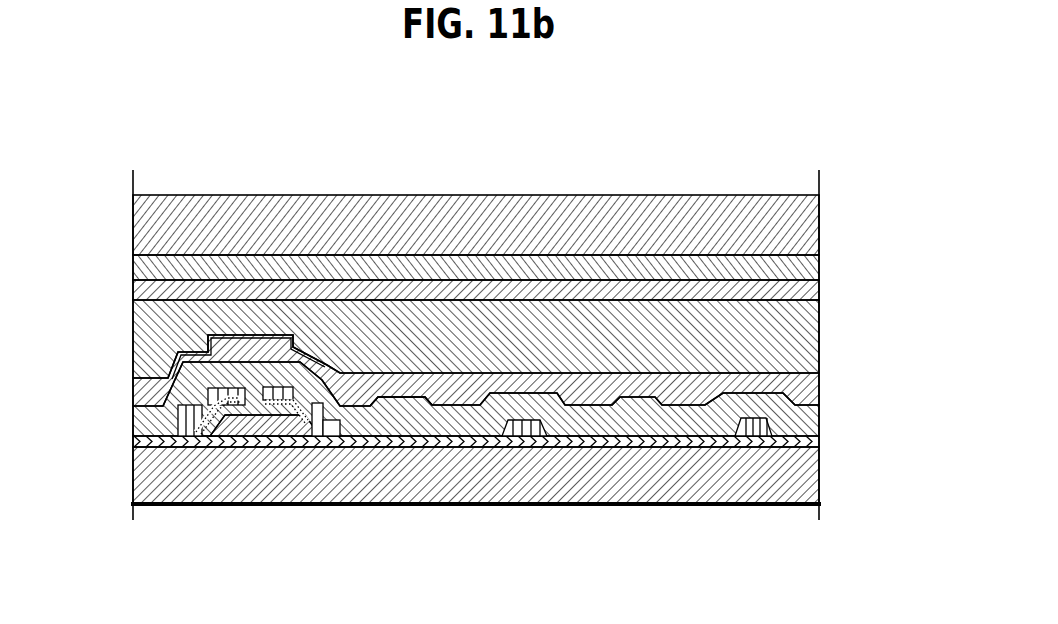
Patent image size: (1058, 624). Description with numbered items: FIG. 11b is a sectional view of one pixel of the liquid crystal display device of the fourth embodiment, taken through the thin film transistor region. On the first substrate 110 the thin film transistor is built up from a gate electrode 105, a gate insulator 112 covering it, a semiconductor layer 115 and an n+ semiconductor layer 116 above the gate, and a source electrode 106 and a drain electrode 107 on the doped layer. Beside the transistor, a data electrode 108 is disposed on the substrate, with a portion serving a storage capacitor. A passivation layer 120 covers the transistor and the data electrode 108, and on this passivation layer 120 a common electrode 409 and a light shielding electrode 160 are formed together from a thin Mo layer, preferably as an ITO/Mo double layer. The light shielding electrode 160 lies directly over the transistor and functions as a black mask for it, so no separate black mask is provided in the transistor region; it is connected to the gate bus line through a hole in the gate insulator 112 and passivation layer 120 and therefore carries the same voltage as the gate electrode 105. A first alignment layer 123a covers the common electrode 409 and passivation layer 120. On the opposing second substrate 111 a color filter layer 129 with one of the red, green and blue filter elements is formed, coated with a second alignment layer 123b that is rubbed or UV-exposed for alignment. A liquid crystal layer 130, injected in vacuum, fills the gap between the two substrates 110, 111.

The gate electrode 105 is at (250, 440).
The source electrode 106 is at (207, 402).
The drain electrode 107 is at (335, 440).
The data electrode 108 is at (523, 430).
The first substrate 110 is at (705, 490).
The second substrate 111 is at (697, 210).
The gate insulator 112 is at (819, 442).
The semiconductor layer 115 is at (205, 440).
The n+ semiconductor layer 116 is at (185, 402).
The passivation layer 120 is at (819, 413).
The first alignment layer 123a is at (819, 383).
The second alignment layer 123b is at (819, 288).
The color filter layer 129 is at (819, 258).
The liquid crystal layer 130 is at (140, 327).
The light shielding electrode 160 is at (227, 358).
The common electrode 409 is at (407, 400).